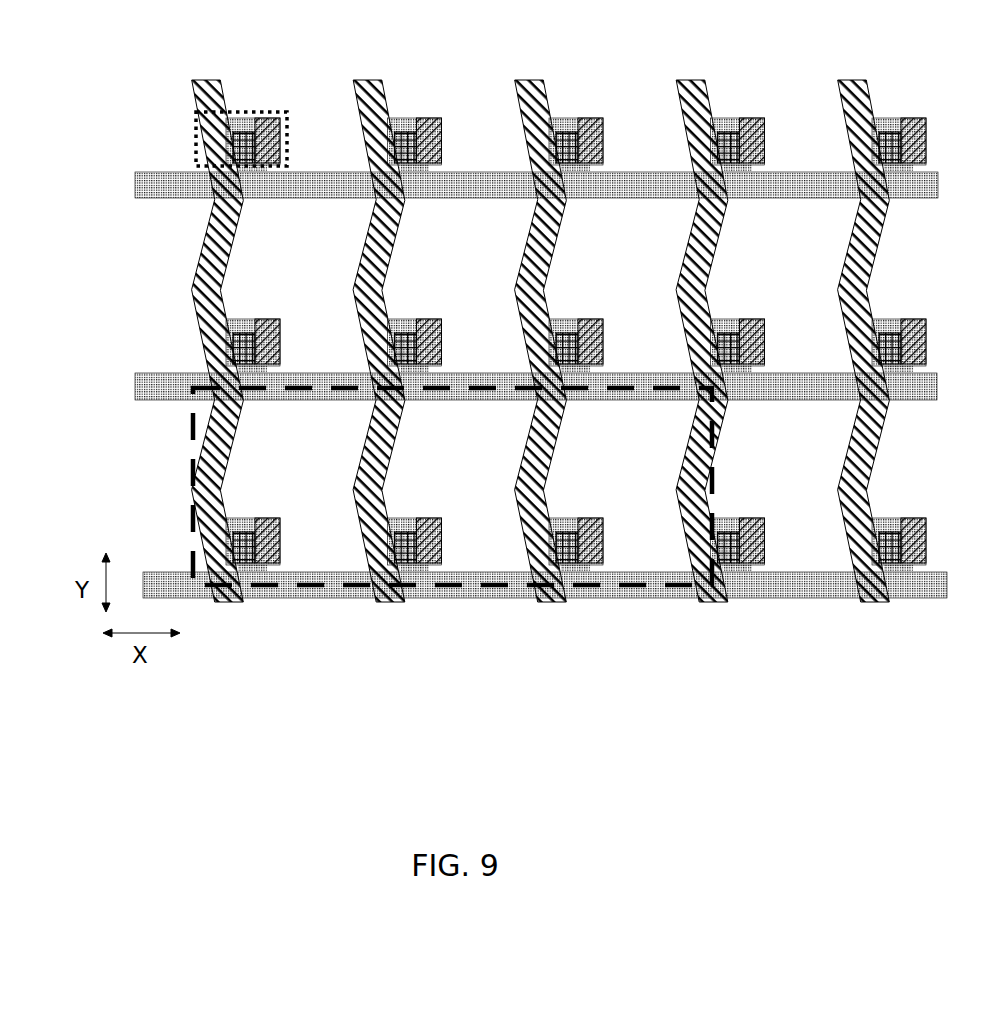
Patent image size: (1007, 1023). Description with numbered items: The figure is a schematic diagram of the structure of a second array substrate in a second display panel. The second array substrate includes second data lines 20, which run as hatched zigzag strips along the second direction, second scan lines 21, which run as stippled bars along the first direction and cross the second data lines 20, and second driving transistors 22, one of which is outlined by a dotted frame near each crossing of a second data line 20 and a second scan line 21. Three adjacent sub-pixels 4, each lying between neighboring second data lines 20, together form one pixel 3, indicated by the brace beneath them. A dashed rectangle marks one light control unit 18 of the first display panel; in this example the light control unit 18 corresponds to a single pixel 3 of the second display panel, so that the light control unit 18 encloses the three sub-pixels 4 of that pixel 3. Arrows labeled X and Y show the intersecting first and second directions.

The second data line 20 is at (220, 96).
The second scan line 21 is at (333, 171).
The second driving transistor 22 is at (288, 122).
The light control unit 18 is at (190, 486).
The sub-pixel 4 is at (592, 688).
The pixel 3 is at (446, 615).